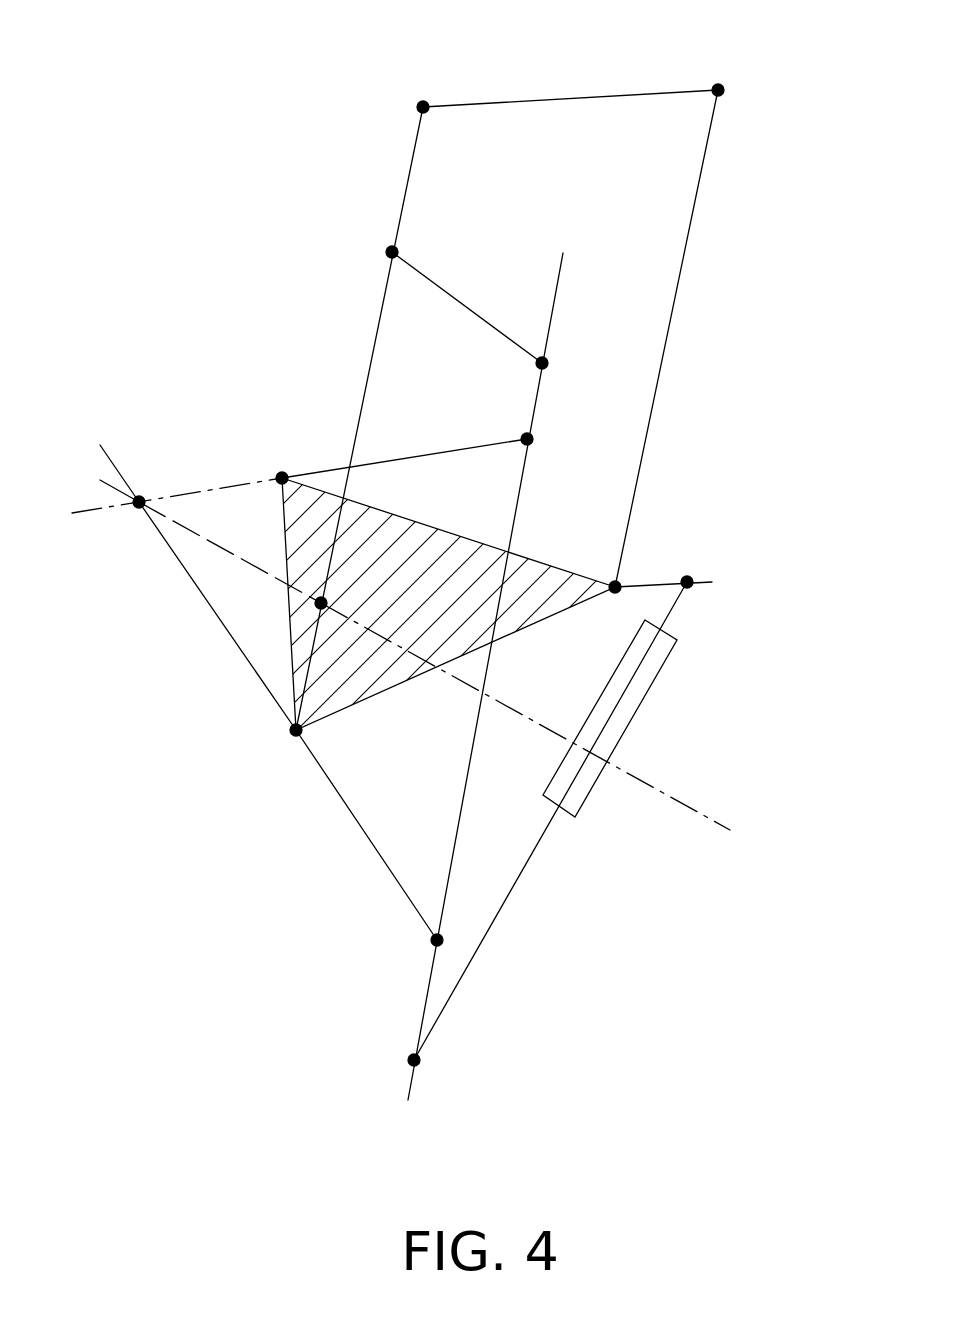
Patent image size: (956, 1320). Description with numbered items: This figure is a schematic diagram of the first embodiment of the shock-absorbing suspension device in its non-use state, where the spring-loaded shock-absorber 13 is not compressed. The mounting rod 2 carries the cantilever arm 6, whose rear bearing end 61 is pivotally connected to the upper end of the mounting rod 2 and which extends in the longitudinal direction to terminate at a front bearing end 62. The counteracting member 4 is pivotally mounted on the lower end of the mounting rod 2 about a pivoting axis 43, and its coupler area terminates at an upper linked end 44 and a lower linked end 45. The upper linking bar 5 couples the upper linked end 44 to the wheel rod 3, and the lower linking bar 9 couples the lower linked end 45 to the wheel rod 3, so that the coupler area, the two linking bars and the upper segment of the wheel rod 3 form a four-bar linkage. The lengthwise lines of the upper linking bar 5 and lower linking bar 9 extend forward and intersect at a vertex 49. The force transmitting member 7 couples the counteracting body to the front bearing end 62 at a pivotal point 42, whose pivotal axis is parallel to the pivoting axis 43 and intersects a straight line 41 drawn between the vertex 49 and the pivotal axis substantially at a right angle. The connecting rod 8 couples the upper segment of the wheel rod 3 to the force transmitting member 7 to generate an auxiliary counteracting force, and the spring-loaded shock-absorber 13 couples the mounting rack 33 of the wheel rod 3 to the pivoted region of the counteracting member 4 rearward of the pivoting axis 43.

The mounting rod 2 is at (706, 207).
The wheel rod 3 is at (412, 980).
The counteracting member 4 is at (274, 634).
The upper linking bar 5 is at (397, 446).
The cantilever arm 6 is at (613, 74).
The force transmitting member 7 is at (391, 184).
The connecting rod 8 is at (483, 301).
The lower linking bar 9 is at (334, 812).
The spring-loaded shock-absorber 13 is at (658, 706).
The mounting rack 33 is at (420, 1060).
The straight line 41 is at (515, 718).
The pivotal point 42 is at (318, 610).
The pivoting axis 43 is at (620, 584).
The upper linked end 44 is at (276, 478).
The lower linked end 45 is at (292, 736).
The vertex 49 is at (133, 508).
The rear bearing end 61 is at (724, 88).
The front bearing end 62 is at (423, 101).